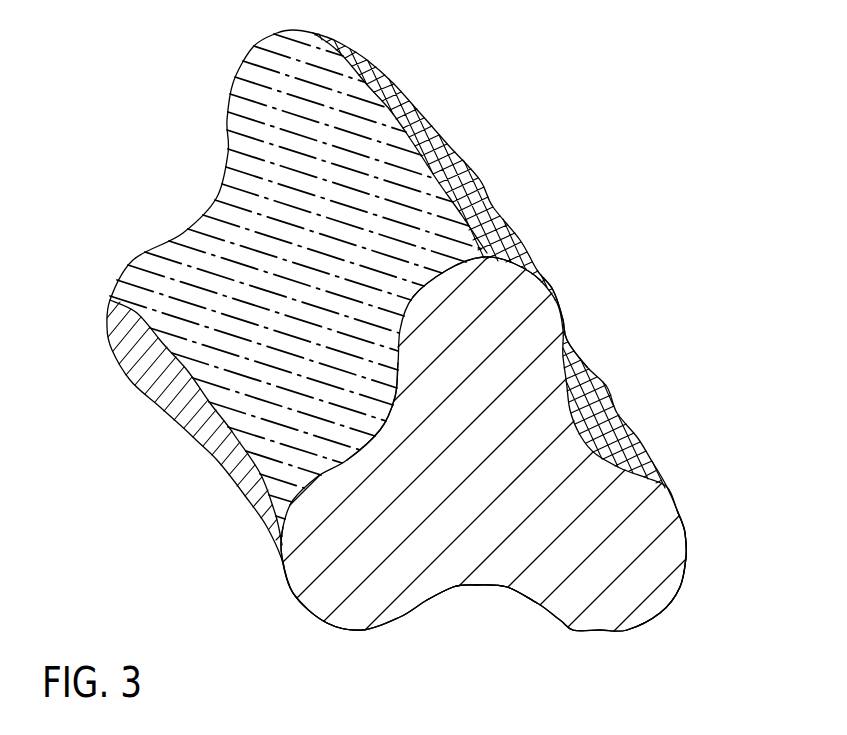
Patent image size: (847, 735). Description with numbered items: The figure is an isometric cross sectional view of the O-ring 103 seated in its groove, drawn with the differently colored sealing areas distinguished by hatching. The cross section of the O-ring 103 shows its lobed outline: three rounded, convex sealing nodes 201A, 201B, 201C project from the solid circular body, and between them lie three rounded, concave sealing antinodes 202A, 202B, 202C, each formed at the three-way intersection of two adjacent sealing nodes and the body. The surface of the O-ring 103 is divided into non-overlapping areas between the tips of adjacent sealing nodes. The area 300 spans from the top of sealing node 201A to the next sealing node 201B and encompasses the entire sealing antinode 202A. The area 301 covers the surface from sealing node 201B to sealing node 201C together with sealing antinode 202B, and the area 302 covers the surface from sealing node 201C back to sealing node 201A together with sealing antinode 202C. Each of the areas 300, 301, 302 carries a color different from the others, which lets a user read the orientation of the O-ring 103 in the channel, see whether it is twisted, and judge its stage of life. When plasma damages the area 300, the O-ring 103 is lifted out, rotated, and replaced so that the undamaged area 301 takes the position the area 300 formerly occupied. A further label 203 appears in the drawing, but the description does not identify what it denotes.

The O-ring 103 is at (620, 567).
The sealing node 201A is at (492, 250).
The sealing node 201B is at (286, 603).
The sealing node 201C is at (690, 557).
The sealing antinode 202A is at (386, 405).
The sealing antinode 202B is at (479, 590).
The sealing antinode 202C is at (597, 431).
The junction point 203 is at (567, 318).
The area 300 is at (238, 208).
The area 301 is at (179, 396).
The area 302 is at (462, 145).